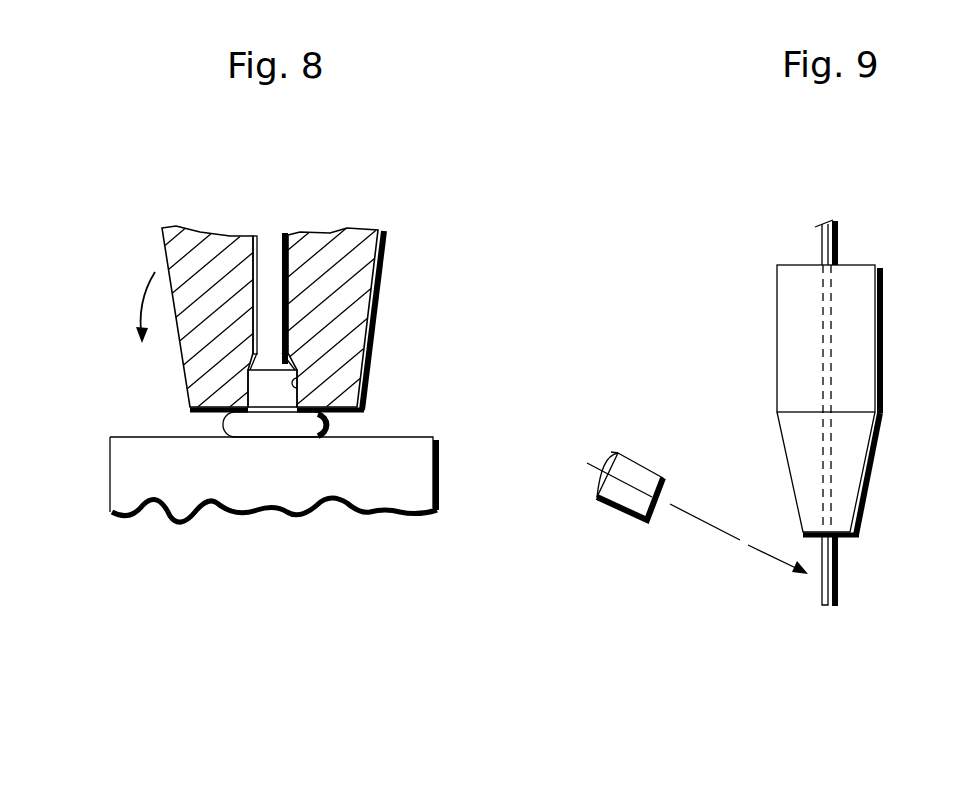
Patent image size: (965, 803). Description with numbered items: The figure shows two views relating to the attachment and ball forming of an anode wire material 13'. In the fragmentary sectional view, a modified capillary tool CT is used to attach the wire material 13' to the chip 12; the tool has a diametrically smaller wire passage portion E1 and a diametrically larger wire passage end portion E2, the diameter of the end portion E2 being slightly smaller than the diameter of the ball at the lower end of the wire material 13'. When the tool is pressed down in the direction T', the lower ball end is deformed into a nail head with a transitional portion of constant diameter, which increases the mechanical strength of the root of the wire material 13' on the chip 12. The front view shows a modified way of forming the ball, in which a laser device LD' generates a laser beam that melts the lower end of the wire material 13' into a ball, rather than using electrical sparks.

In FIG. 8, the wire passage portion E1 is at (283, 302).
In FIG. 8, the wire material 13' is at (337, 253).
In FIG. 9, the wire material 13' is at (881, 404).
In FIG. 8, the wire passage end portion E2 is at (300, 372).
In FIG. 8, the chip 12 is at (217, 480).
In FIG. 8, the nozzle movement direction T' is at (77, 286).
In FIG. 9, the cutting tool CT is at (877, 446).
In FIG. 9, the laser diode LD' is at (697, 467).